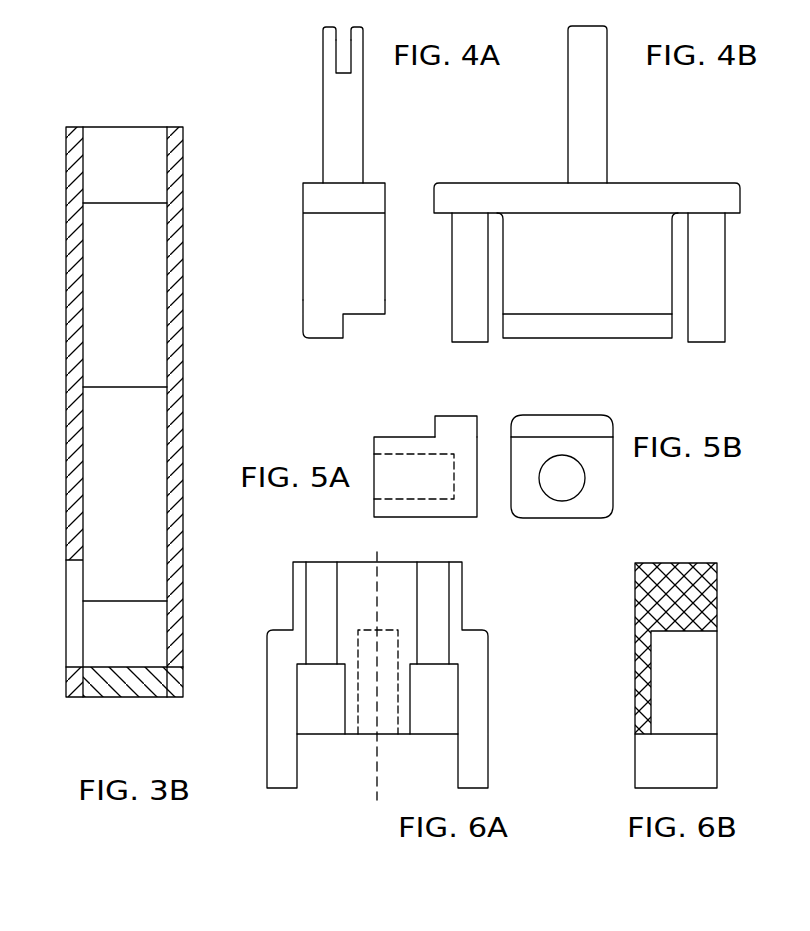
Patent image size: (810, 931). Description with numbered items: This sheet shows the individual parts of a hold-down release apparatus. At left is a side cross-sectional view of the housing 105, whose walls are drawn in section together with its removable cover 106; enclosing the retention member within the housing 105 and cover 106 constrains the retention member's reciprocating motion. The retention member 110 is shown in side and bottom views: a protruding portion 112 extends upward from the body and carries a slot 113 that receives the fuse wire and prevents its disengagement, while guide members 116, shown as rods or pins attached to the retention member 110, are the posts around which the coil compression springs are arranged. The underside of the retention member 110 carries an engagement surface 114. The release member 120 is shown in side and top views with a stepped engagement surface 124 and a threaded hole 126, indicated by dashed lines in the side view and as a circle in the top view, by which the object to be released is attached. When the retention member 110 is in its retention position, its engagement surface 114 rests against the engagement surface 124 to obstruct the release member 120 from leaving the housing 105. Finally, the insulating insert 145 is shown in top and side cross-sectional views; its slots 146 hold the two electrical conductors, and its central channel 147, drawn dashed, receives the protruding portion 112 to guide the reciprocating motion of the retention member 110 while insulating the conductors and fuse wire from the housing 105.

In FIG. 3B, the housing 105 is at (197, 86).
In FIG. 3B, the removable cover 106 is at (72, 357).
In FIG. 4A, the retention member 110 is at (284, 266).
In FIG. 4B, the retention member 110 is at (705, 148).
In FIG. 4A, the protruding portion 112 is at (350, 132).
In FIG. 4B, the protruding portion 112 is at (593, 89).
In FIG. 4A, the slot 113 is at (343, 60).
In FIG. 4A, the engagement surface 114 is at (349, 327).
In FIG. 4B, the engagement surface 114 is at (628, 327).
In FIG. 4B, the guide members 116 is at (710, 287).
In FIG. 5A, the release member 120 is at (489, 529).
In FIG. 5B, the release member 120 is at (627, 492).
In FIG. 5A, the engagement surface 124 is at (428, 422).
In FIG. 5B, the engagement surface 124 is at (565, 427).
In FIG. 5A, the threaded hole 126 is at (398, 453).
In FIG. 5B, the threaded hole 126 is at (552, 473).
In FIG. 6A, the insulating insert 145 is at (512, 755).
In FIG. 6B, the insulating insert 145 is at (739, 767).
In FIG. 6A, the slots 146 is at (318, 699).
In FIG. 6A, the channel 147 is at (397, 688).
In FIG. 6B, the channel 147 is at (703, 696).